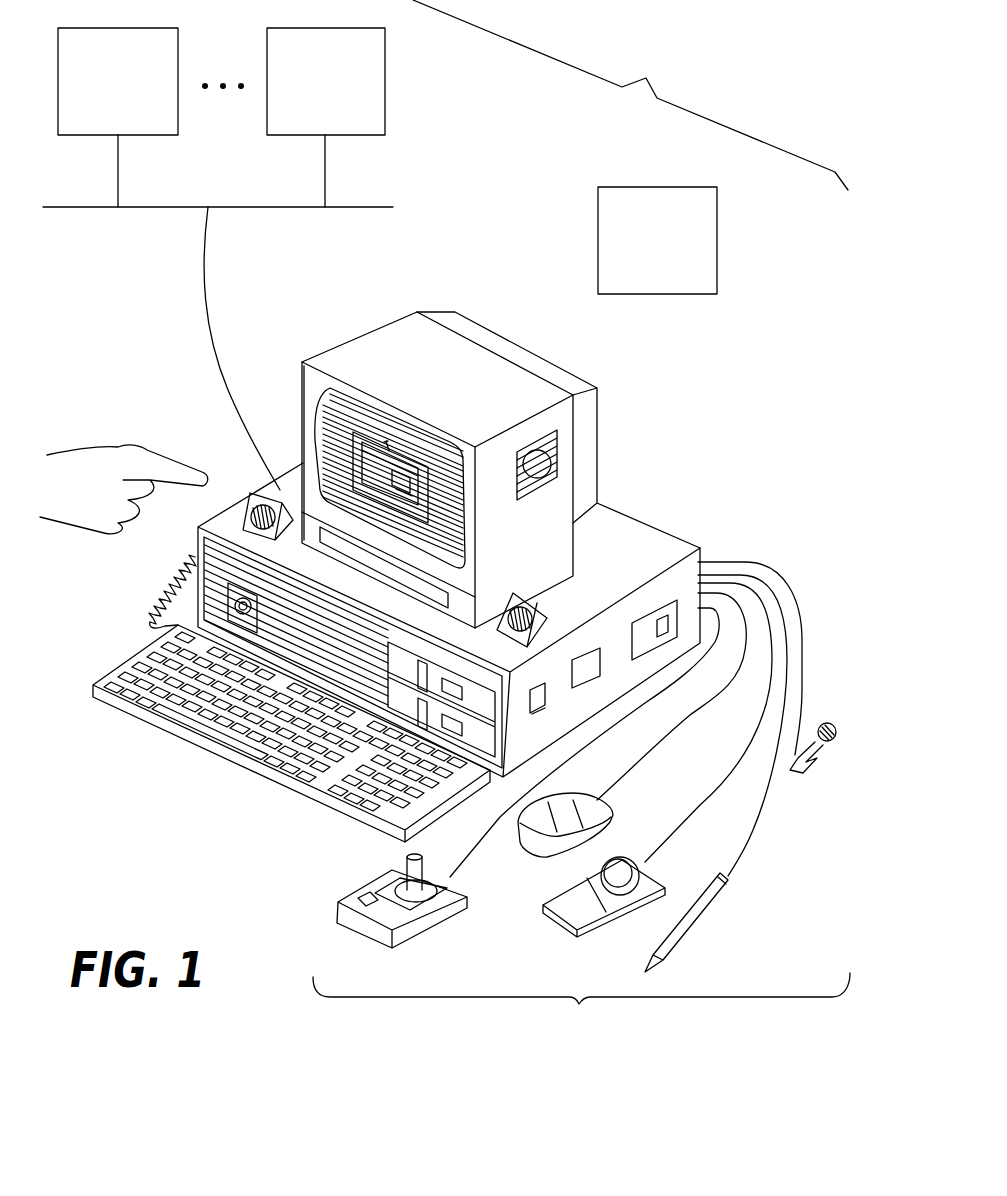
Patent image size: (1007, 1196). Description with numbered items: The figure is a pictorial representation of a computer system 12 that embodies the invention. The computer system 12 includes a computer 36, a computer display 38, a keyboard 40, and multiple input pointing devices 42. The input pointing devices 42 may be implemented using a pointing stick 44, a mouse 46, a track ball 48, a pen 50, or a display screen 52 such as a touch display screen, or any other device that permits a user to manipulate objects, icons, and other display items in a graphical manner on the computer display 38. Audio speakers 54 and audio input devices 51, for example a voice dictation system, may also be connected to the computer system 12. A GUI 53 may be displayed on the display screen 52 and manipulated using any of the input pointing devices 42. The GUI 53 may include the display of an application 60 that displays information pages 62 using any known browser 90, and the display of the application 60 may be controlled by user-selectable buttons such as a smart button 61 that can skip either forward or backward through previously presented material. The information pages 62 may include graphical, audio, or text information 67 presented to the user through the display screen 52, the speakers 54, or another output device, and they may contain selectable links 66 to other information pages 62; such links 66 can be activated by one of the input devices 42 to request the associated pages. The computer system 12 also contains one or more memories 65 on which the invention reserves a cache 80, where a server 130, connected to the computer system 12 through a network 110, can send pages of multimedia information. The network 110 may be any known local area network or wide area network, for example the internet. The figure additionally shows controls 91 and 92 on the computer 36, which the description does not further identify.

The computer system 12 is at (190, 367).
The computer 36 is at (533, 733).
The computer display 38 is at (587, 420).
The keyboard 40 is at (327, 774).
The input pointing devices 42 is at (581, 1008).
The pointing stick 44 is at (413, 930).
The mouse 46 is at (530, 842).
The track ball 48 is at (570, 908).
The pen 50 is at (690, 918).
The audio input devices 51 is at (829, 722).
The display screen 52 is at (302, 447).
The GUI 53 is at (333, 395).
The audio speakers 54 is at (256, 492).
The application 60 is at (358, 437).
The smart button 61 is at (388, 445).
The information pages 62 is at (688, 187).
The memories 65 is at (699, 560).
The selectable links 66 is at (703, 226).
The text information 67 is at (612, 226).
The cache 80 is at (656, 628).
The browser 90 is at (598, 676).
The button 91 is at (545, 696).
The indicator 92 is at (540, 704).
The network 110 is at (227, 207).
The server 130 is at (221, 117).